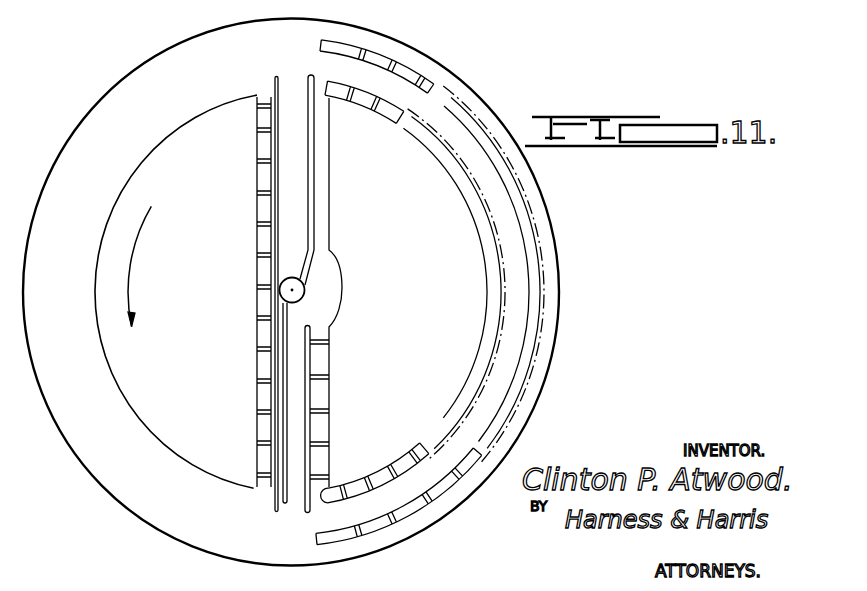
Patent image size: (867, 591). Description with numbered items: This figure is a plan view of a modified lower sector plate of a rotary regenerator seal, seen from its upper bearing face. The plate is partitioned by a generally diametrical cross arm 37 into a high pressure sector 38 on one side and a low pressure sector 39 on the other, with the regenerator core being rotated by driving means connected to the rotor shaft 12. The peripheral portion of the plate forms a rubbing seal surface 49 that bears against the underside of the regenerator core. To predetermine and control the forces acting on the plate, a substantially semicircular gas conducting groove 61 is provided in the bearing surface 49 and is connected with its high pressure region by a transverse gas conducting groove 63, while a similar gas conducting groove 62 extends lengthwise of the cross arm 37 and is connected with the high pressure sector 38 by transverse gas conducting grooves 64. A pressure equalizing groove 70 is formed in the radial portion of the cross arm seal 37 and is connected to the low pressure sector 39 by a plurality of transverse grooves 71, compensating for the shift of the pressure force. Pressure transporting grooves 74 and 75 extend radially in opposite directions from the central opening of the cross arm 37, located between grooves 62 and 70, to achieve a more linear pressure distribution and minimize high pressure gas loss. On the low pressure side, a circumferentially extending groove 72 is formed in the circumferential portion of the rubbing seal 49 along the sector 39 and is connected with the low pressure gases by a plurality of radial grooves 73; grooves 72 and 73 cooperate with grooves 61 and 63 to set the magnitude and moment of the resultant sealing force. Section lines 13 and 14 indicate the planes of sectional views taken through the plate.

The rotor shaft 12 is at (230, 382).
The section line 13- 13 is at (230, 168).
The section line 14- 14 is at (458, 297).
The cross arm 37 is at (318, 133).
The high pressure sector 38 is at (196, 249).
The low pressure sector 39 is at (444, 234).
The rubbing seal bearing surface 49 is at (467, 122).
The gas conducting groove 61 is at (436, 520).
The gas conducting groove 62 is at (262, 267).
The transverse gas conducting groove 63 is at (418, 530).
The transverse gas conducting groove 64 is at (262, 316).
The pressure equalizing groove 70 is at (307, 336).
The transverse grooves 71 is at (318, 375).
The circumferentially extending groove 72 is at (405, 483).
The radial grooves 73 is at (372, 478).
The pressure transporting groove 74 is at (286, 503).
The pressure transporting groove 75 is at (309, 82).